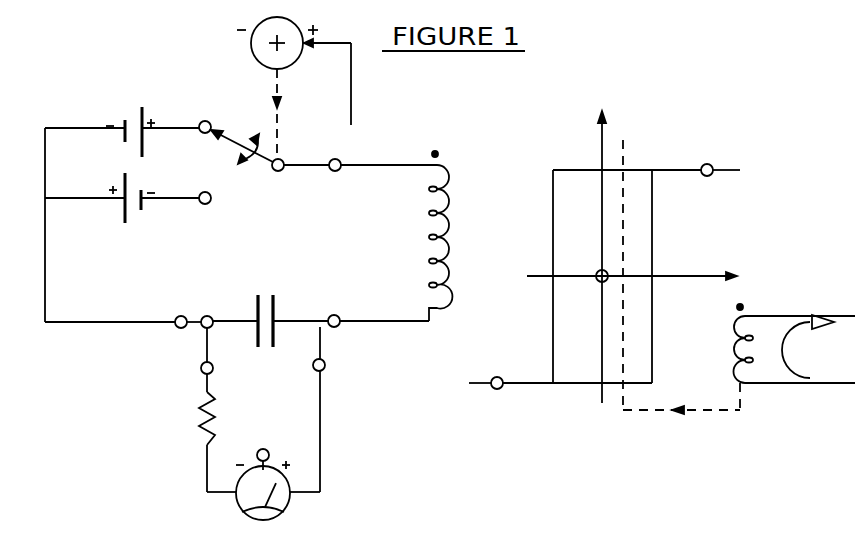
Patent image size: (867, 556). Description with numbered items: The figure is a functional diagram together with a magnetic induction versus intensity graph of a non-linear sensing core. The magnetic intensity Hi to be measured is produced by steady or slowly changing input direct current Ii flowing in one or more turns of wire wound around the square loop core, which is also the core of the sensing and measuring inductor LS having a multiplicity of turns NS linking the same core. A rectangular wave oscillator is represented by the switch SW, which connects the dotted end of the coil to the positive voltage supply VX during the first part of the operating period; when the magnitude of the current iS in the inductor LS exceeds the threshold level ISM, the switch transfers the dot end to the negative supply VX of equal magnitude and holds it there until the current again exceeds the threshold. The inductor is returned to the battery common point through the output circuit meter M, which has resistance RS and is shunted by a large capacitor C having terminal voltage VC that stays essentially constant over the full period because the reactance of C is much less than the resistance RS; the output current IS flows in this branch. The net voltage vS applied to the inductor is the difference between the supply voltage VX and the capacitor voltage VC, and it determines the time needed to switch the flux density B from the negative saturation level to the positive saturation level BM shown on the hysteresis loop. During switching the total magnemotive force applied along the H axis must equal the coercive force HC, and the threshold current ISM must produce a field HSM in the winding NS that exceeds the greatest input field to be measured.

The threshold current level ISM is at (249, 43).
The voltage supply VX is at (308, 190).
The switch SW is at (247, 161).
The inductor current iS is at (405, 145).
The sensing and measuring inductor LS is at (420, 243).
The winding turns NS is at (404, 286).
The net inductor voltage vS is at (334, 179).
The capacitor C is at (275, 317).
The capacitor terminal voltage VC is at (214, 363).
The meter resistance RS is at (189, 410).
The output circuit meter M is at (263, 469).
The output current IS is at (340, 460).
The magnetic flux density B is at (601, 245).
The magnetic intensity H is at (641, 278).
The saturation flux density level BM is at (528, 160).
The coercive force HC is at (484, 258).
The input magnetic intensity Hi is at (626, 270).
The threshold field HSM is at (708, 190).
The input direct current Ii is at (794, 344).